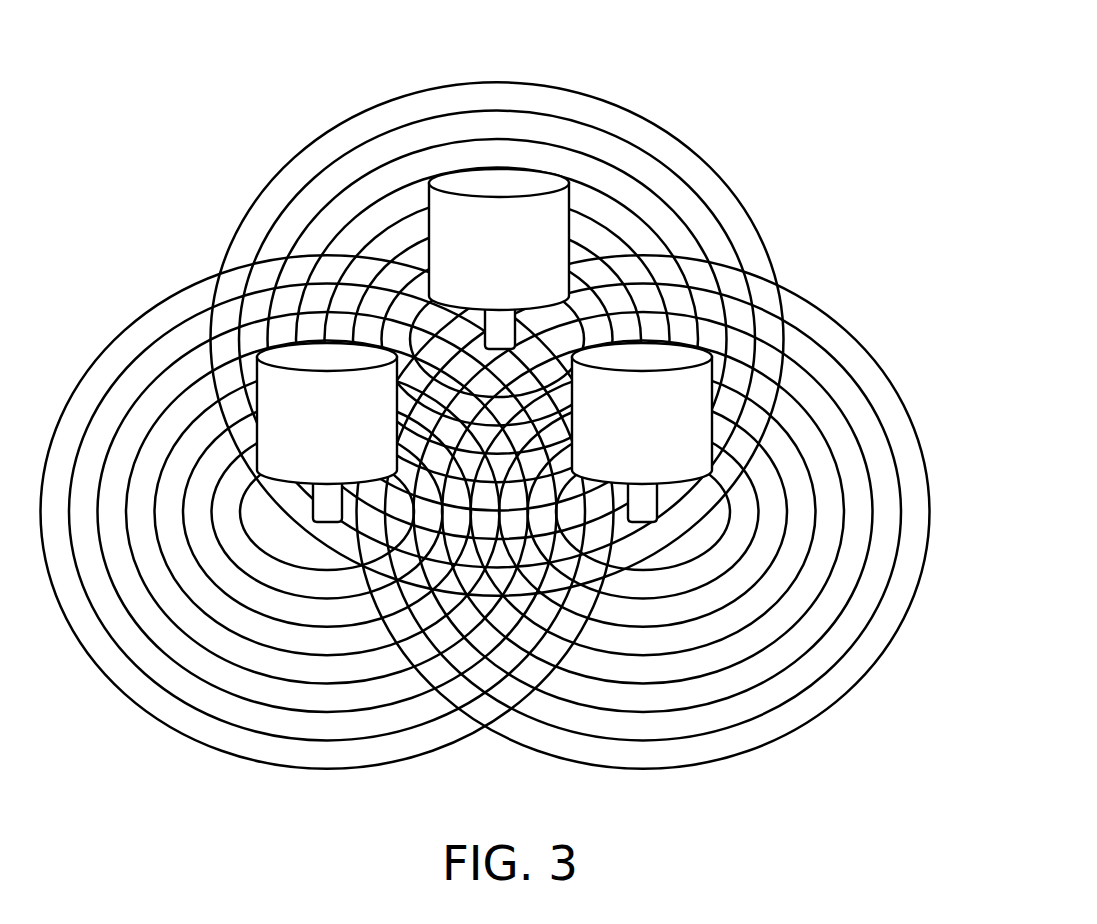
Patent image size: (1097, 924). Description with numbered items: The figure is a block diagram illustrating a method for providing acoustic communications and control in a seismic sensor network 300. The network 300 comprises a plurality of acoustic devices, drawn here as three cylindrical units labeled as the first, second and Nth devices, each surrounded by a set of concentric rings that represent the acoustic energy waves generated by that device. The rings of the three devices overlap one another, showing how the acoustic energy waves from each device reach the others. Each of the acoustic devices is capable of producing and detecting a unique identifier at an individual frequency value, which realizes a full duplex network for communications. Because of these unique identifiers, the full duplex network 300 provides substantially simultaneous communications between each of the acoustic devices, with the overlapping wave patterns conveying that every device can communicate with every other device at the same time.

The seismic sensor network 300 is at (498, 384).